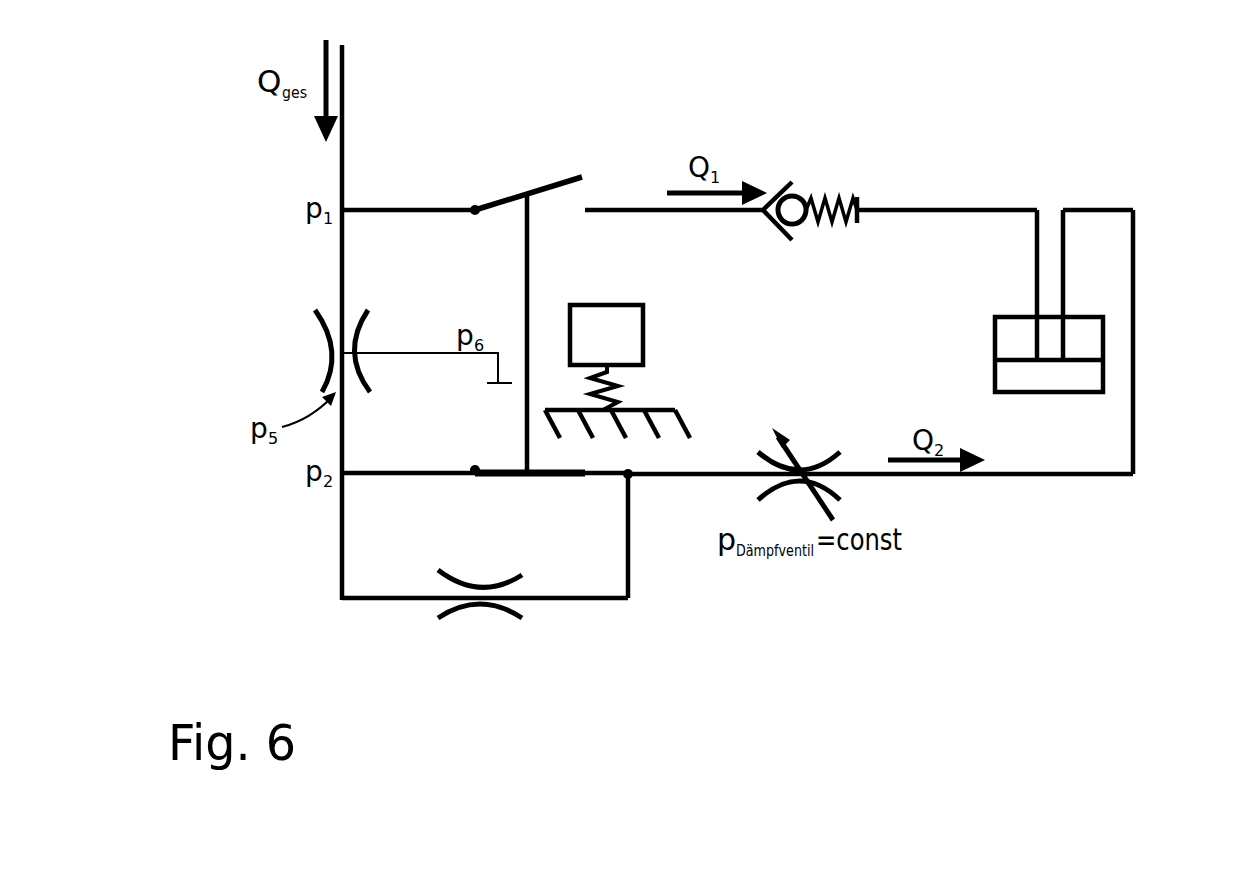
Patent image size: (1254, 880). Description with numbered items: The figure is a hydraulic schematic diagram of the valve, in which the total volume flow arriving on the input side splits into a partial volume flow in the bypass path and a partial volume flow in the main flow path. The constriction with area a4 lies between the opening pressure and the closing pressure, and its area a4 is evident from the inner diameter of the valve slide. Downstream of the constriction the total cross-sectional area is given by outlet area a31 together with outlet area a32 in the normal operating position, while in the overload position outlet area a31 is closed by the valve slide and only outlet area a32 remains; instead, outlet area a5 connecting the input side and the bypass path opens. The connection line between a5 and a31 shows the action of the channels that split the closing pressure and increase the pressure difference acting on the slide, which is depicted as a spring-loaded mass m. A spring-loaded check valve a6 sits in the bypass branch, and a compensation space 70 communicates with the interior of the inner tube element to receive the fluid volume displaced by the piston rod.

The compensation space 70 is at (1070, 375).
The area of constriction a4 is at (329, 351).
The outlet area a5 is at (540, 178).
The check valve with spring a6 is at (810, 195).
The outlet area a31 is at (497, 491).
The outlet area a32 is at (480, 610).
The mass m is at (617, 371).